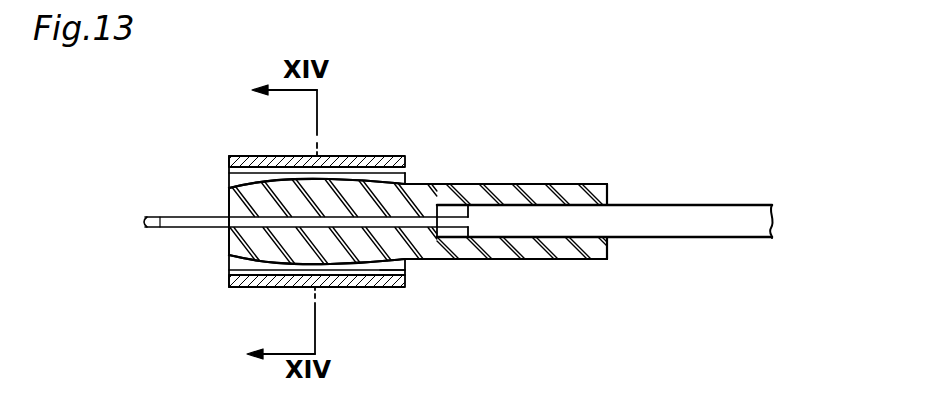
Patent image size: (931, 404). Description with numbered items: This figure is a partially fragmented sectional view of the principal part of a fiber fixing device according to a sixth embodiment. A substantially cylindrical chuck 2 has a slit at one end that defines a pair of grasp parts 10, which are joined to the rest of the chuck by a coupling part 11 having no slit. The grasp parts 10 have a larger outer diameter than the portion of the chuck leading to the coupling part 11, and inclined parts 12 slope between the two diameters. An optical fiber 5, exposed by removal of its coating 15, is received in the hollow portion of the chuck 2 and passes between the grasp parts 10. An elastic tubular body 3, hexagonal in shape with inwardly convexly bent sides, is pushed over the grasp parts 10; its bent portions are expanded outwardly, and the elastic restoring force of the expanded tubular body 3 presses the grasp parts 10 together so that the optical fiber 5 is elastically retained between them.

The chuck 2 is at (461, 260).
The elastic tubular body 3 is at (243, 279).
The optical fiber 5 is at (160, 229).
The grasp parts 10 is at (324, 190).
The coupling part 11 is at (554, 256).
The inclined parts 12 is at (393, 275).
The coating 15 is at (708, 226).